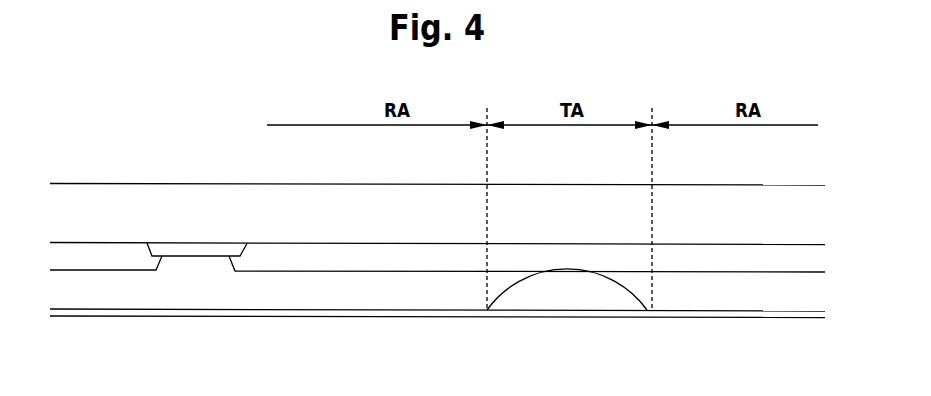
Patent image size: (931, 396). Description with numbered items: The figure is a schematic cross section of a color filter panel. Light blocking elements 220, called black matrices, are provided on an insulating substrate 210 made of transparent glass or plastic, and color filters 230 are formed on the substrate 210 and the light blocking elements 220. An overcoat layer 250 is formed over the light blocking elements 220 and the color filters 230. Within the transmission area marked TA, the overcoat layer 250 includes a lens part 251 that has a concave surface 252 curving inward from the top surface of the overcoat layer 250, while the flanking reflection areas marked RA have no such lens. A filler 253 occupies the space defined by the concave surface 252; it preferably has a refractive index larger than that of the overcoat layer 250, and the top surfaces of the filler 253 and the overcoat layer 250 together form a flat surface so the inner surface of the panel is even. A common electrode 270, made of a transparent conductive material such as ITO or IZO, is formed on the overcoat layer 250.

The insulating substrate 210 is at (163, 207).
The light blocking elements 220 is at (222, 249).
The color filters 230 is at (97, 253).
The overcoat layer 250 is at (329, 300).
The lens part 251 is at (532, 311).
The concave surface 252 is at (625, 290).
The filler 253 is at (564, 304).
The common electrode 270 is at (190, 317).